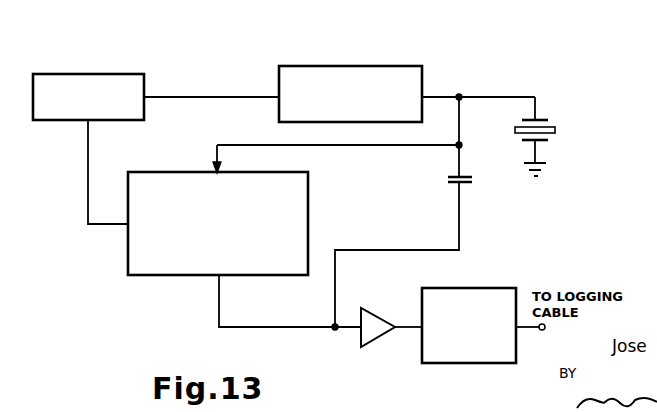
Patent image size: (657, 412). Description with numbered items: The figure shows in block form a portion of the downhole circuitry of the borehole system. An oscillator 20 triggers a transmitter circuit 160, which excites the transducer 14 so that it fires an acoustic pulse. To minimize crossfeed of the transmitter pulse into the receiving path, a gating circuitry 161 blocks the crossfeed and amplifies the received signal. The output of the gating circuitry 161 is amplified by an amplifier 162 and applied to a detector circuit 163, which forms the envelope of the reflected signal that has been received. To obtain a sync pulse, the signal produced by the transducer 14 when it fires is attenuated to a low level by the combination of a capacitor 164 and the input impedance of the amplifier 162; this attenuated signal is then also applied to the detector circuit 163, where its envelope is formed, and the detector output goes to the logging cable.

The oscillator 20 is at (90, 74).
The transmitter circuit 160 is at (357, 66).
The transducer 14 is at (555, 130).
The capacitor 164 is at (477, 186).
The gating circuitry 161 is at (160, 275).
The amplifier 162 is at (375, 345).
The detector circuit 163 is at (462, 288).